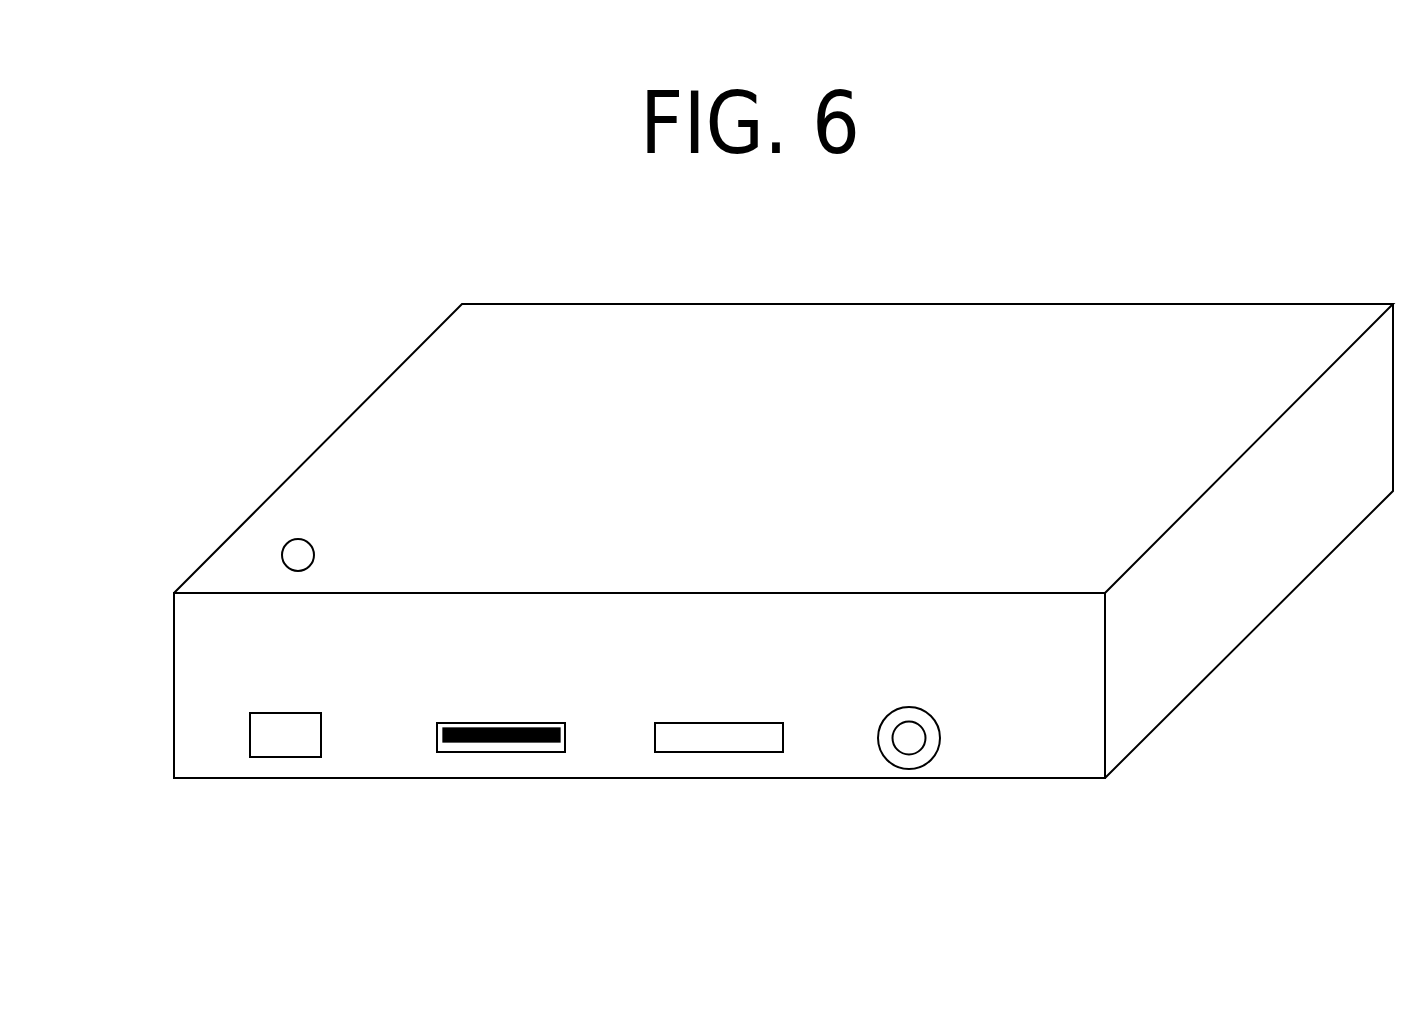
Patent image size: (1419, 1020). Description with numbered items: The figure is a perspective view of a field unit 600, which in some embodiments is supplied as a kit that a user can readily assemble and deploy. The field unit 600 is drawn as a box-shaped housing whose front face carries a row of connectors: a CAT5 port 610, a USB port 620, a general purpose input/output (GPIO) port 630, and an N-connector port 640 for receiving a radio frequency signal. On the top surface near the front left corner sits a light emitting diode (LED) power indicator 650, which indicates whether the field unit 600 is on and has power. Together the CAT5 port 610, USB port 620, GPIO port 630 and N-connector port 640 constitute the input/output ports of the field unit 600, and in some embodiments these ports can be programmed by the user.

The field unit 600 is at (266, 195).
The CAT5 port 610 is at (250, 735).
The USB port 620 is at (500, 722).
The general purpose input/output (GPIO) port 630 is at (718, 725).
The N-connector port 640 is at (888, 720).
The light emitting diode (LED) power indicator 650 is at (282, 553).